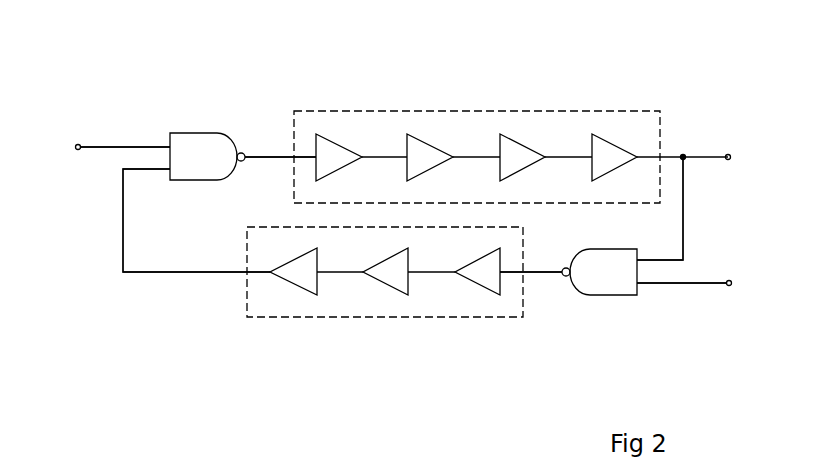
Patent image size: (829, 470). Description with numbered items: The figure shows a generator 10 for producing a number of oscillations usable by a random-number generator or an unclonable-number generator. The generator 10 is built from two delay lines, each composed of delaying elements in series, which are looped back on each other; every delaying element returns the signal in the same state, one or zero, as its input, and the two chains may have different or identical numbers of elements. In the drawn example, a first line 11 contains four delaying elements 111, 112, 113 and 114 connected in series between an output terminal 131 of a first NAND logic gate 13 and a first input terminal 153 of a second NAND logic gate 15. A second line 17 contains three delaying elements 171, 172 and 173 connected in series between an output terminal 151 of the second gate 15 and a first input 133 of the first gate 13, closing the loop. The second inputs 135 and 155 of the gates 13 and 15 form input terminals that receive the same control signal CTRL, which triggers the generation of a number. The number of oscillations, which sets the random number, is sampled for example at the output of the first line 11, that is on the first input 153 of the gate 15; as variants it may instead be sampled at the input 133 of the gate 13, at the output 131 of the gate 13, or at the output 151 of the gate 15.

The generator 10 is at (258, 56).
The first line 11 is at (490, 110).
The first NAND logic gate 13 is at (193, 142).
The second NAND logic gate 15 is at (622, 296).
The second line 17 is at (432, 318).
The delaying element 111 is at (338, 142).
The delaying element 112 is at (428, 142).
The delaying element 113 is at (520, 142).
The delaying element 114 is at (613, 140).
The output terminal 131 is at (267, 152).
The first input 133 is at (125, 217).
The second input 135 is at (122, 145).
The output terminal 151 is at (542, 273).
The first input terminal 153 is at (683, 220).
The second input 155 is at (697, 284).
The delaying element 171 is at (477, 283).
The delaying element 172 is at (387, 283).
The delaying element 173 is at (293, 283).